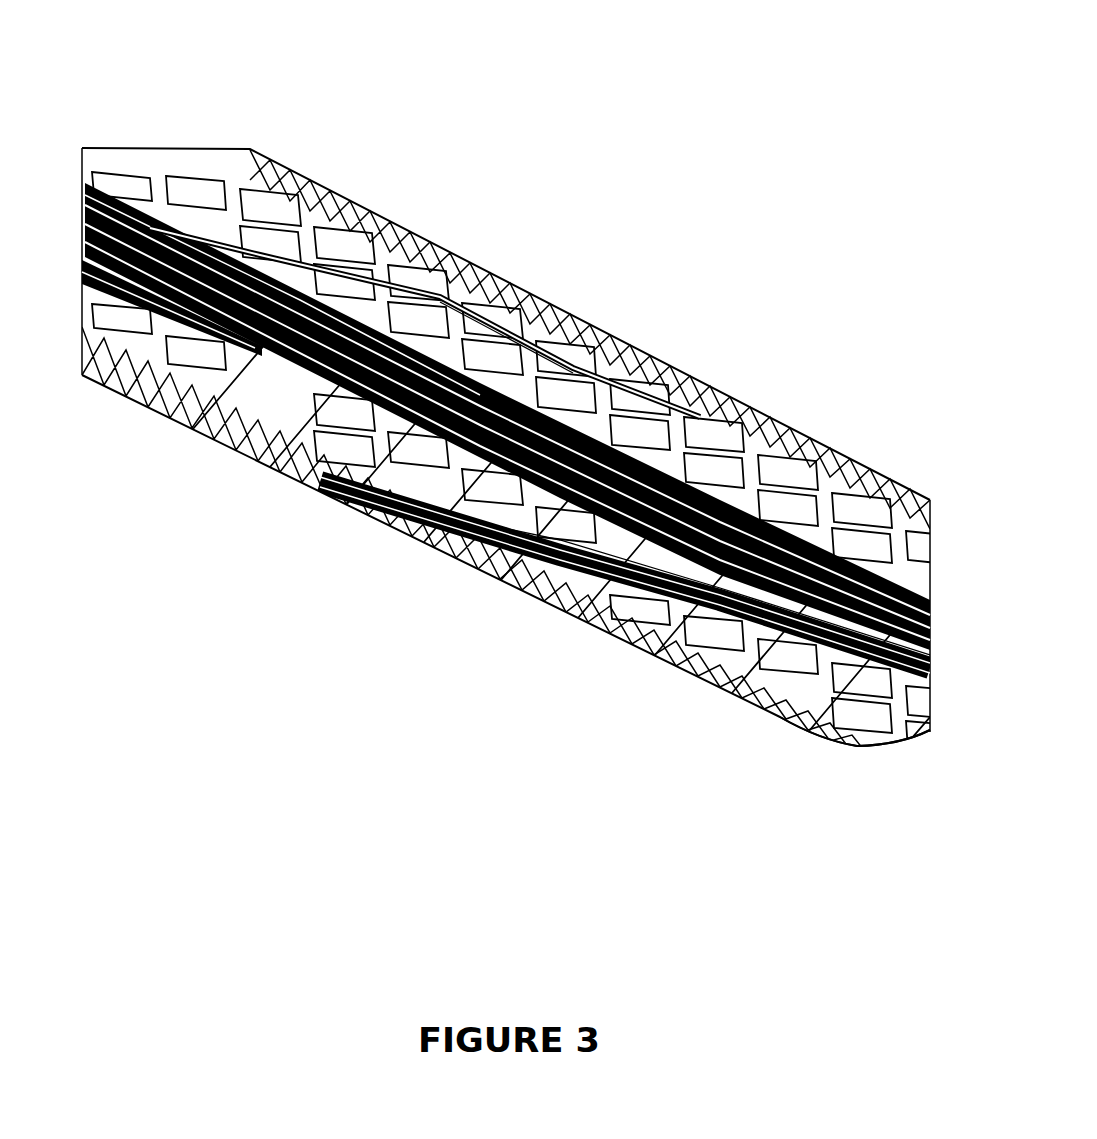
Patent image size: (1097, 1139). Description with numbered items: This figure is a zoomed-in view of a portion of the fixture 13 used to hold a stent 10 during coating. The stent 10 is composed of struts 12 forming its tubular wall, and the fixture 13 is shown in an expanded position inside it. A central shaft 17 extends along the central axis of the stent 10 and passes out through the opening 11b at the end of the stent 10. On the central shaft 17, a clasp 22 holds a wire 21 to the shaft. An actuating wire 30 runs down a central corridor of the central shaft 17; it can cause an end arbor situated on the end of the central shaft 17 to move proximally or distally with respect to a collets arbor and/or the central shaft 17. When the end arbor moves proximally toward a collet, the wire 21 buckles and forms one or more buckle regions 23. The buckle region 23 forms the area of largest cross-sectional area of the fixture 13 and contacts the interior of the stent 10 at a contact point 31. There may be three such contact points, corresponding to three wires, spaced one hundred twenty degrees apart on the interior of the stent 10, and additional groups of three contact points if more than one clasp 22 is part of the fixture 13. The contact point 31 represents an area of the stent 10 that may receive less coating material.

The stent 10 is at (322, 662).
The opening 11b is at (850, 812).
The struts 12 is at (645, 642).
The fixture 13 is at (76, 146).
The central shaft 17 is at (350, 362).
The wire 21 is at (601, 388).
The clasp 22 is at (154, 232).
The buckle region 23 is at (432, 297).
The actuating wire 30 is at (277, 330).
The contact point 31 is at (476, 311).